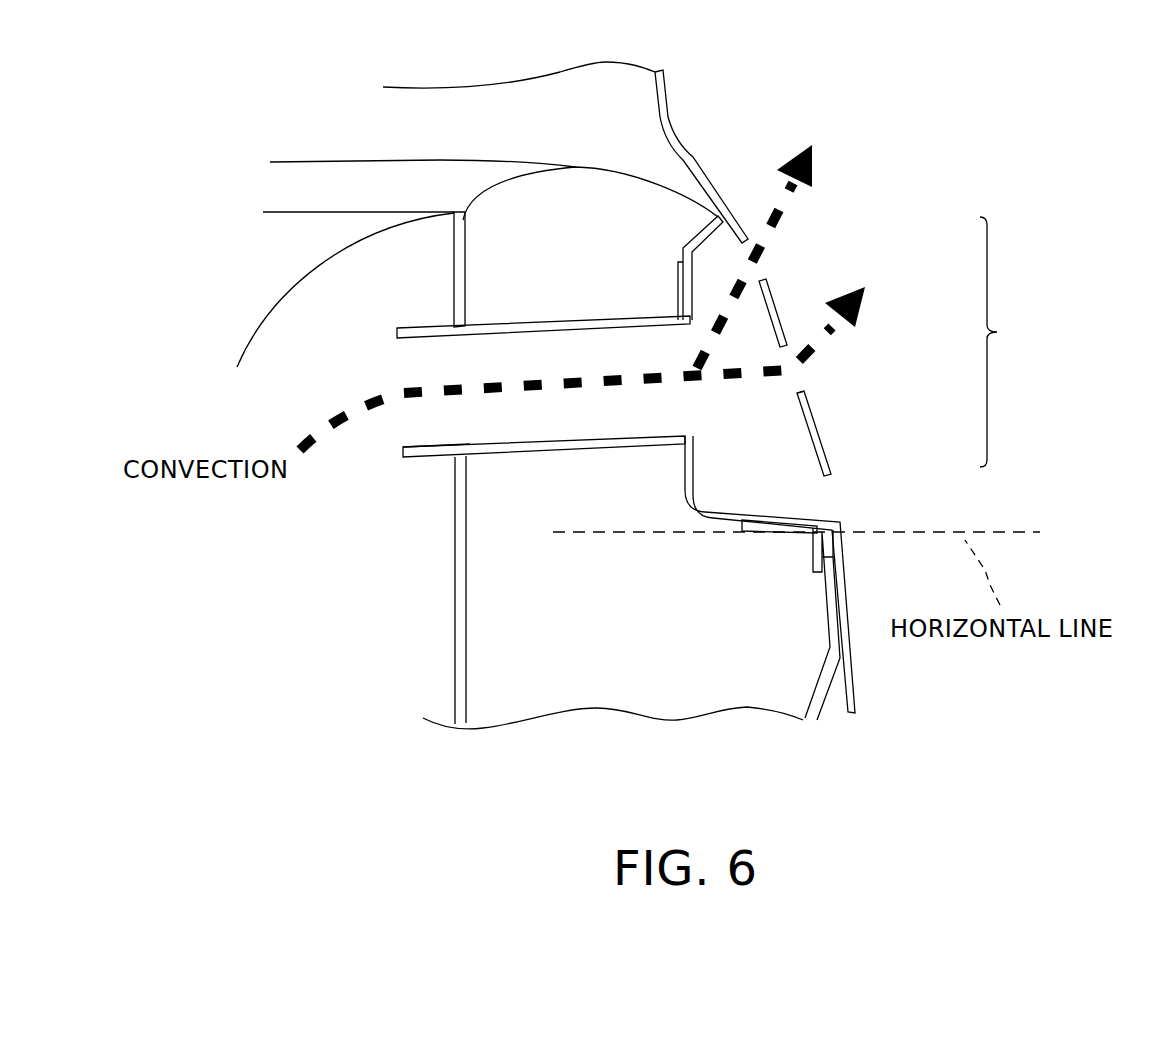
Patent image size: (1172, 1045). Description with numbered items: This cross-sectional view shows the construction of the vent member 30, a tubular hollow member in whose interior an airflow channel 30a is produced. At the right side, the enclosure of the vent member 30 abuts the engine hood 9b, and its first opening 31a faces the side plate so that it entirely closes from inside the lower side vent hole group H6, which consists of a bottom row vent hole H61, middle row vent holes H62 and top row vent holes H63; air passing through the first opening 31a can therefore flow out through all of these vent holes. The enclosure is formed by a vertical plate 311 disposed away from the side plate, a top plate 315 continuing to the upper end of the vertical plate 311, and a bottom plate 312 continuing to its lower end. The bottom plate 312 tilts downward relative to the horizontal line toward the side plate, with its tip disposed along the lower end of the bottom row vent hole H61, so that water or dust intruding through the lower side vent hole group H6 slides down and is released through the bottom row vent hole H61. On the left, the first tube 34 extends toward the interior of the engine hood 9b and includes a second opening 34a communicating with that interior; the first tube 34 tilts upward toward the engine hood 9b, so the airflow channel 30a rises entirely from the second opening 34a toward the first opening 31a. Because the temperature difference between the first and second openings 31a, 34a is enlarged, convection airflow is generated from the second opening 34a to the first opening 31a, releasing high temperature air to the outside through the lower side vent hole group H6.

The vent member 30 is at (413, 317).
The airflow channel 30a is at (582, 297).
The top plate 315 is at (686, 240).
The vertical plate 311 is at (678, 285).
The bottom plate 312 is at (727, 513).
The first opening 31a is at (787, 390).
The first tube 34 is at (503, 457).
The second opening 34a is at (403, 420).
The engine hood 9b is at (858, 688).
The bottom row vent hole H61 is at (837, 497).
The middle row vent hole H62 is at (800, 380).
The top row vent hole H63 is at (762, 268).
The lower side vent hole group H6 is at (1012, 342).